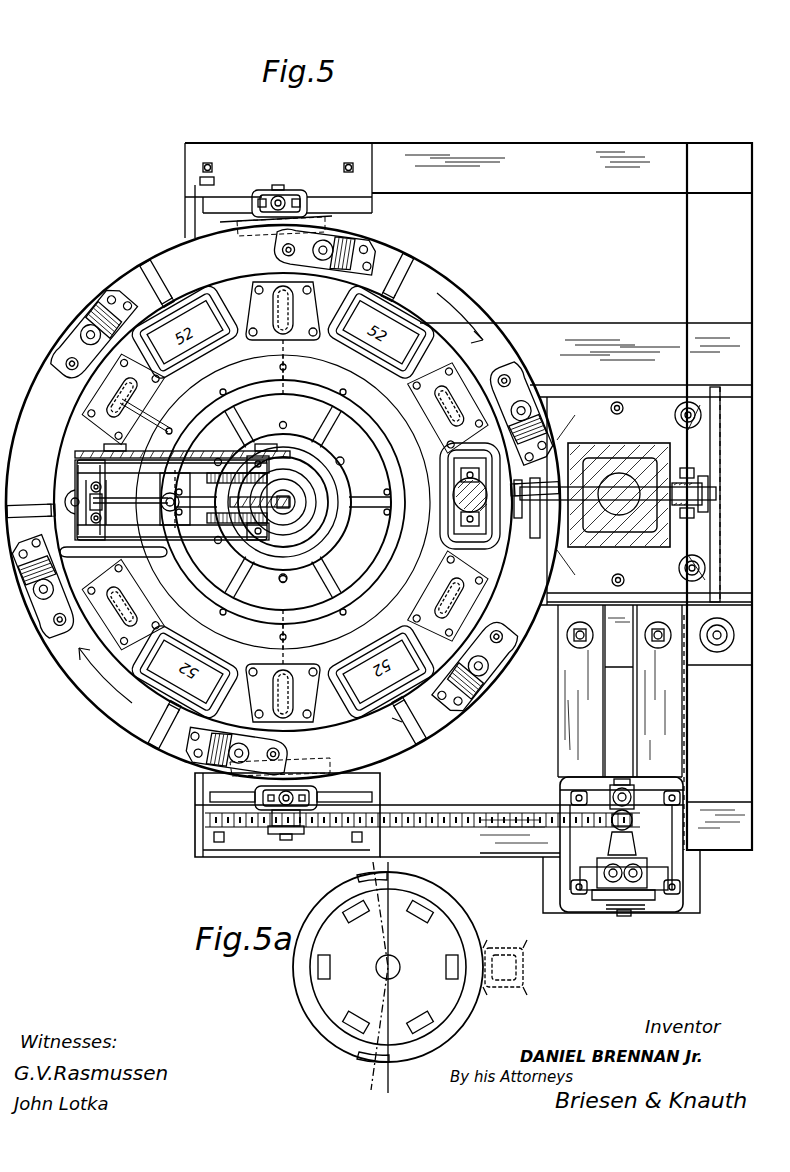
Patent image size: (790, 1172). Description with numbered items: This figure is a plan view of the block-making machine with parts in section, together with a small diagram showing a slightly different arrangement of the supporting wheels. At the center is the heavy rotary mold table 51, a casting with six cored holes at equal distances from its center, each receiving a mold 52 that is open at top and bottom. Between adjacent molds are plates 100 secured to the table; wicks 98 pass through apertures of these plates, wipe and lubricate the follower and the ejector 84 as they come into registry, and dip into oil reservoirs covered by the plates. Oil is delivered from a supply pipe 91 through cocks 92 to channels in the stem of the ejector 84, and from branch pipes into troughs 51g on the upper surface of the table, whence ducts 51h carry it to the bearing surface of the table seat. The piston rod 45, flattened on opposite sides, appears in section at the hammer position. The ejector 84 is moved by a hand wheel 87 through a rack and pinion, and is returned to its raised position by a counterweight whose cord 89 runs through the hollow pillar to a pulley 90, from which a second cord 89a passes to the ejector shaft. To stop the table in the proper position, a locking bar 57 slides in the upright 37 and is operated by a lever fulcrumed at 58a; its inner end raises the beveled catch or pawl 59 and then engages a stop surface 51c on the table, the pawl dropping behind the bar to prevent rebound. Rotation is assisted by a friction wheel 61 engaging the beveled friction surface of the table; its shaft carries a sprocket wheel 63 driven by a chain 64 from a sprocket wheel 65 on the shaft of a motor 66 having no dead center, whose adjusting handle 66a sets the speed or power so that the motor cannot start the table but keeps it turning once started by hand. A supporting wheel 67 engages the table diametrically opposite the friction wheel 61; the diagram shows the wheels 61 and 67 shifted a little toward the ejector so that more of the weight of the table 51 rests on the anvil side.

In FIG. 5, the upright 37 is at (468, 496).
In FIG. 5A, the upright 37 is at (506, 988).
In FIG. 5, the piston rod 45 is at (455, 488).
In FIG. 5, the mold table 51 is at (462, 300).
In FIG. 5A, the mold table 51 is at (308, 1010).
In FIG. 5, the stop surface 51c is at (410, 268).
In FIG. 5, the troughs 51g is at (292, 392).
In FIG. 5, the ducts 51h is at (342, 461).
In FIG. 5, the mold 52 is at (283, 502).
In FIG. 5A, the mold 52 is at (418, 1018).
In FIG. 5, the locking bar 57 is at (552, 505).
In FIG. 5, the lever fulcrum 58a is at (695, 485).
In FIG. 5, the catch or pawl 59 is at (395, 728).
In FIG. 5, the friction wheel 61 is at (322, 778).
In FIG. 5A, the friction wheel 61 is at (362, 1062).
In FIG. 5, the sprocket wheel 63 is at (250, 820).
In FIG. 5, the chain 64 is at (462, 812).
In FIG. 5, the sprocket wheel 65 is at (632, 818).
In FIG. 5, the motor 66 is at (608, 882).
In FIG. 5, the adjusting handle 66a is at (630, 914).
In FIG. 5, the supporting wheel 67 is at (318, 228).
In FIG. 5A, the supporting wheel 67 is at (370, 876).
In FIG. 5, the ejector 84 is at (92, 489).
In FIG. 5, the hand wheel 87 is at (78, 560).
In FIG. 5, the cord or wire 89 is at (232, 501).
In FIG. 5, the cord 89a is at (213, 455).
In FIG. 5, the pulley 90 is at (300, 490).
In FIG. 5, the supply pipe 91 is at (177, 507).
In FIG. 5, the cocks 92 is at (102, 487).
In FIG. 5, the wicks 98 is at (275, 301).
In FIG. 5, the plates 100 is at (448, 372).